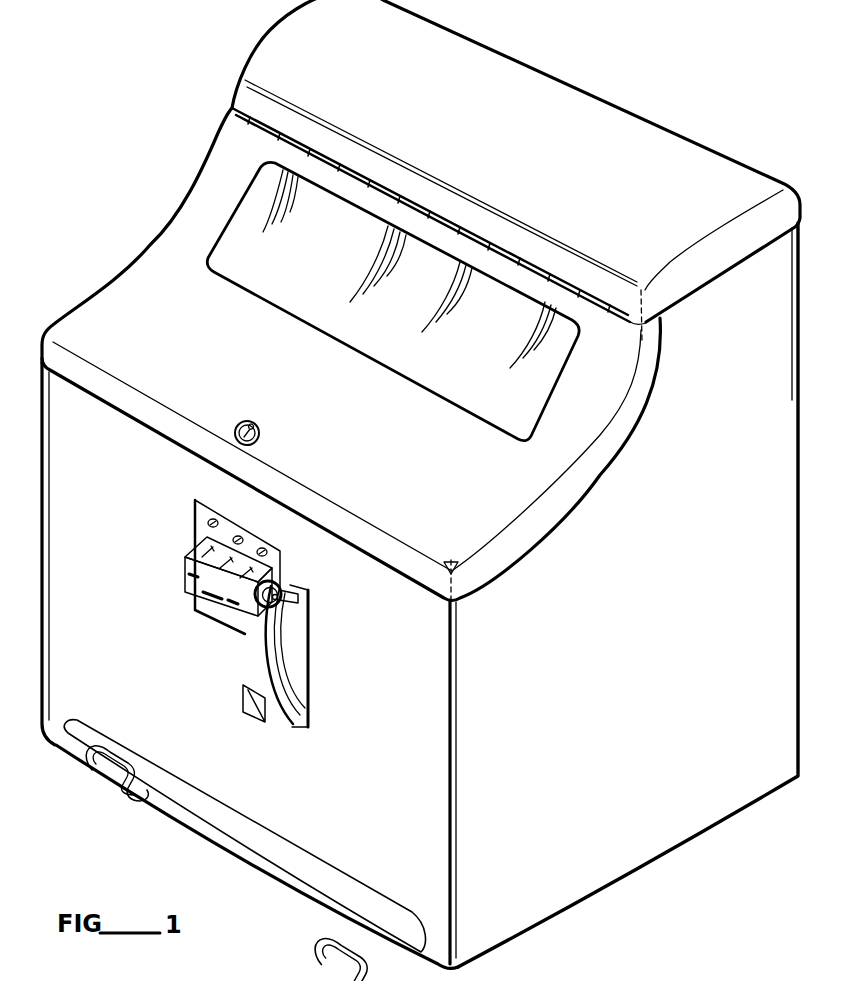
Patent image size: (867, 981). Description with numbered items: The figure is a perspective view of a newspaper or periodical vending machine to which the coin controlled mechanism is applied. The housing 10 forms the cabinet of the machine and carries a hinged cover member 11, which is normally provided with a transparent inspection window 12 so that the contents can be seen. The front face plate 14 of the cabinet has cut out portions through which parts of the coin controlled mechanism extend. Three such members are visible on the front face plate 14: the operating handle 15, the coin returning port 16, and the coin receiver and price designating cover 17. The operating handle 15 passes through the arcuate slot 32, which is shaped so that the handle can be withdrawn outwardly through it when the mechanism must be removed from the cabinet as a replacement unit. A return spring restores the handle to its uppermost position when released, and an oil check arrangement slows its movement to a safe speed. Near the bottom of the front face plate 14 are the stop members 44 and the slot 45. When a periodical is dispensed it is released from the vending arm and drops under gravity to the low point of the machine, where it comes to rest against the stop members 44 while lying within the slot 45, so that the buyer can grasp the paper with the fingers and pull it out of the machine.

The housing 10 is at (616, 687).
The hinged cover member 11 is at (424, 464).
The transparent inspection window 12 is at (497, 366).
The front face plate 14 is at (380, 724).
The operating handle 15 is at (272, 590).
The coin returning port 16 is at (243, 701).
The coin receiver and price designating cover 17 is at (207, 577).
The arcuate slot 32 is at (285, 664).
The stop members 44 is at (115, 766).
The slot 45 is at (279, 846).